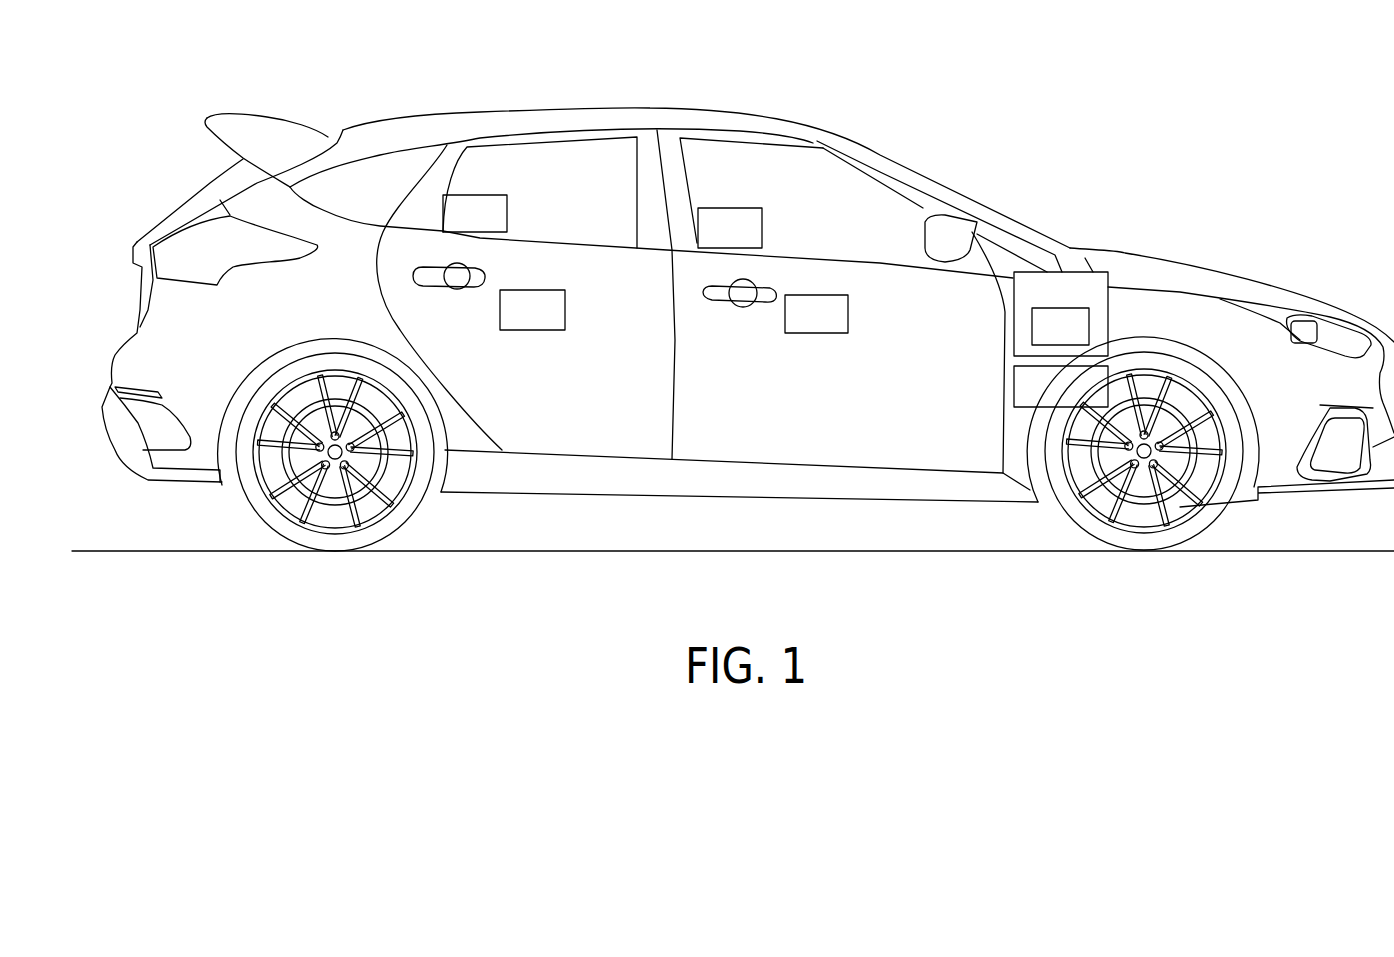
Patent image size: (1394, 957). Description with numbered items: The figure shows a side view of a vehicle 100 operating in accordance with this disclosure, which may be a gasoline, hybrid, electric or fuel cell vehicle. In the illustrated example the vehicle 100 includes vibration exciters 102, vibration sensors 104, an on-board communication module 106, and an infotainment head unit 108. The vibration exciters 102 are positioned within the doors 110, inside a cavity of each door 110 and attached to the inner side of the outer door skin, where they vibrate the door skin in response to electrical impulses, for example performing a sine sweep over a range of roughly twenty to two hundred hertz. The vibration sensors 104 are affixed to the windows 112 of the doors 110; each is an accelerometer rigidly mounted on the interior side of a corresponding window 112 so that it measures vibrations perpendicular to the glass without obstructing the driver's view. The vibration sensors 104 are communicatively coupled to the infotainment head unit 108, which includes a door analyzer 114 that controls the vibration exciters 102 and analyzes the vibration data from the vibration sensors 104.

The vehicle 100 is at (721, 294).
The vibration exciters 102 is at (565, 312).
The vibration sensors 104 is at (507, 215).
The on-board communication module 106 is at (1013, 383).
The infotainment head unit 108 is at (1072, 250).
The doors 110 is at (133, 255).
The windows 112 is at (212, 190).
The door analyzer 114 is at (1061, 314).